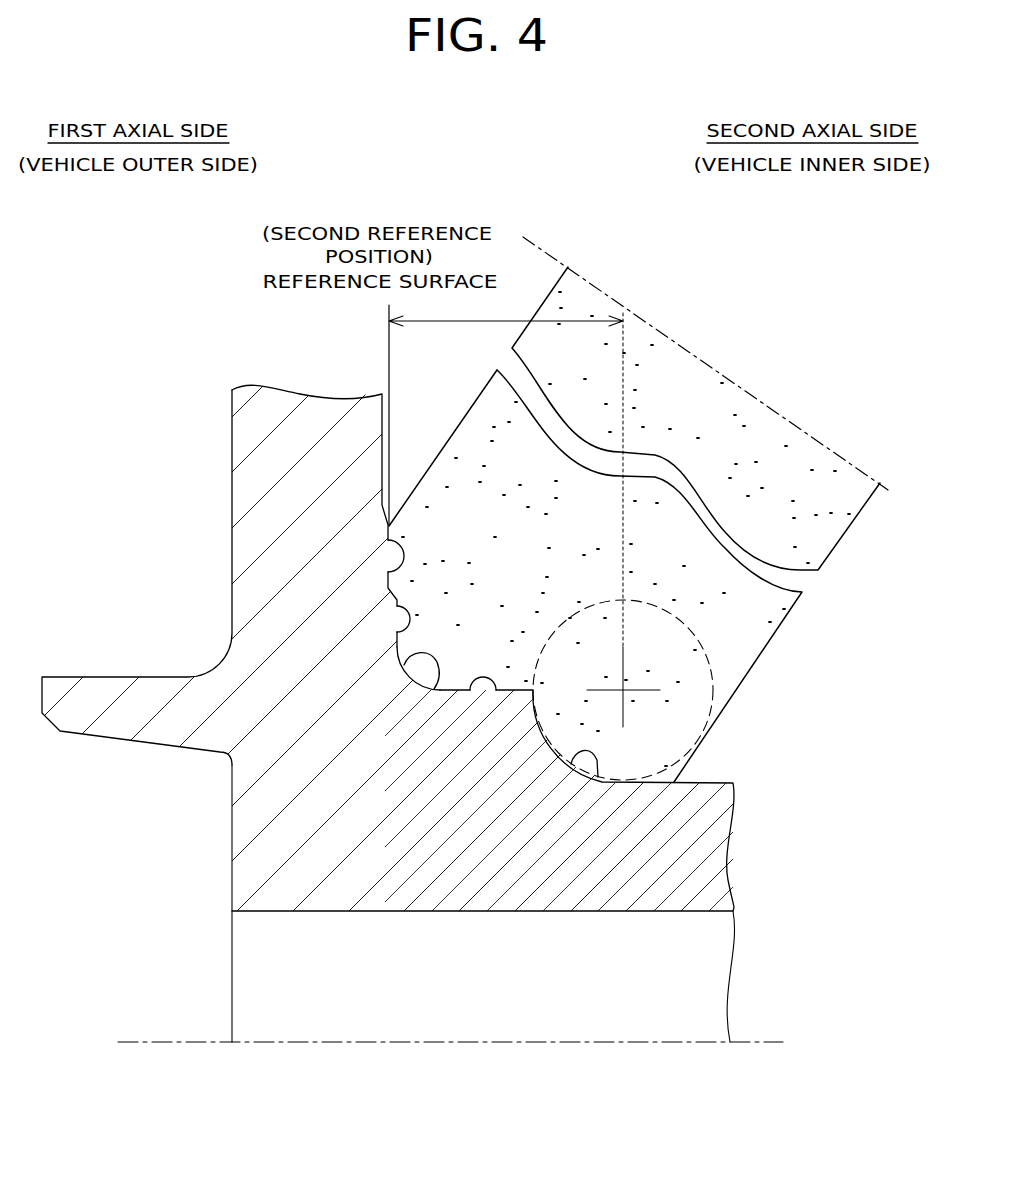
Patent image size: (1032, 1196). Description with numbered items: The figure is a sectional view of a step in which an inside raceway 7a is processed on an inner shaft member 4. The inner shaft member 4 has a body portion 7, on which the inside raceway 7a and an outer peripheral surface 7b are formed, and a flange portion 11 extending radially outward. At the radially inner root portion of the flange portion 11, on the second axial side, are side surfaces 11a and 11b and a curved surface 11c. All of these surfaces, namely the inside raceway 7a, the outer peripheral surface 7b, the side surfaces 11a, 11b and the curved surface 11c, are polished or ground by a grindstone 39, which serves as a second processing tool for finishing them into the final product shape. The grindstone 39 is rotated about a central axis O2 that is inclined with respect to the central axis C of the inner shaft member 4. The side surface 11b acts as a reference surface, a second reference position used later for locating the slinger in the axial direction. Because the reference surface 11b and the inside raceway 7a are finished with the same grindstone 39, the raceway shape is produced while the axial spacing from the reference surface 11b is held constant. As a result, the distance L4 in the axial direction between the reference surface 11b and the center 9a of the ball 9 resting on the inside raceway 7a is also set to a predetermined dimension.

The inner shaft member 4 is at (210, 895).
The body portion 7 is at (660, 888).
The inside raceway 7a is at (600, 780).
The outer peripheral surface 7b is at (497, 692).
The ball 9 is at (713, 672).
The center of the ball 9a is at (623, 692).
The flange portion 11 is at (250, 471).
The side surface 11a is at (397, 620).
The side surface (reference surface) 11b is at (388, 558).
The curved surface 11c is at (427, 688).
The grindstone 39 is at (472, 440).
The central axis of the grindstone O2 is at (545, 252).
The central axis of the inner shaft member C is at (146, 1040).
The distance L4 is at (506, 309).